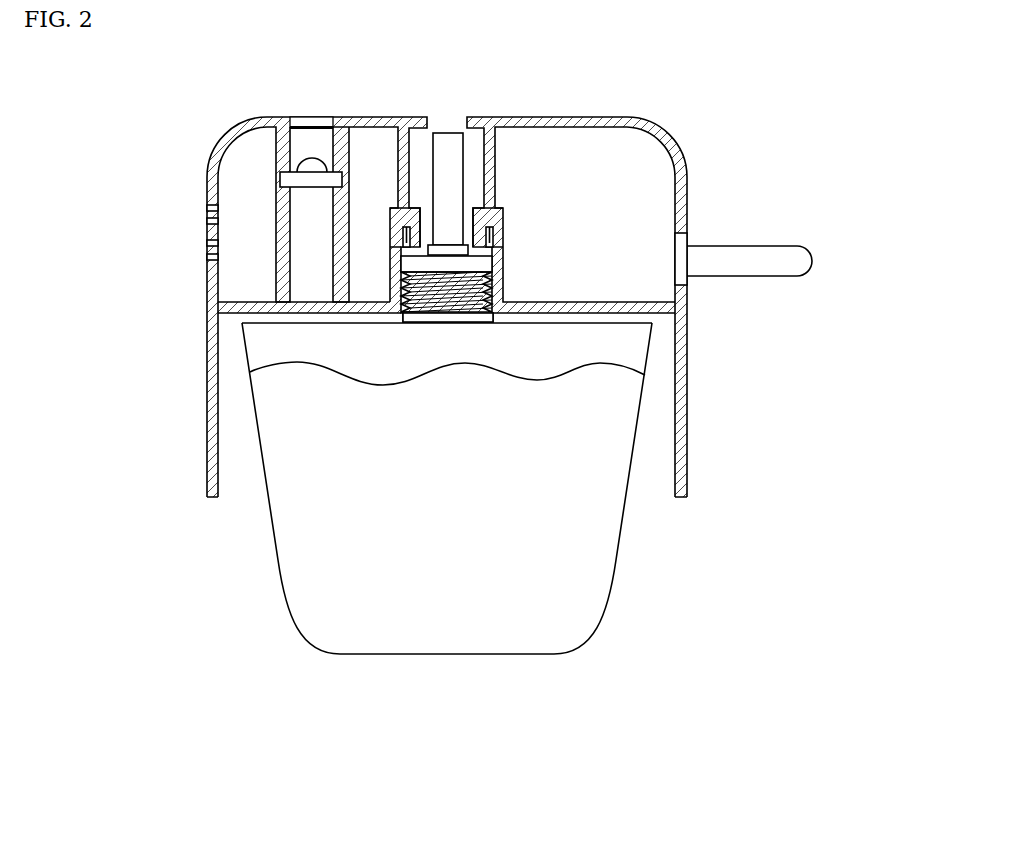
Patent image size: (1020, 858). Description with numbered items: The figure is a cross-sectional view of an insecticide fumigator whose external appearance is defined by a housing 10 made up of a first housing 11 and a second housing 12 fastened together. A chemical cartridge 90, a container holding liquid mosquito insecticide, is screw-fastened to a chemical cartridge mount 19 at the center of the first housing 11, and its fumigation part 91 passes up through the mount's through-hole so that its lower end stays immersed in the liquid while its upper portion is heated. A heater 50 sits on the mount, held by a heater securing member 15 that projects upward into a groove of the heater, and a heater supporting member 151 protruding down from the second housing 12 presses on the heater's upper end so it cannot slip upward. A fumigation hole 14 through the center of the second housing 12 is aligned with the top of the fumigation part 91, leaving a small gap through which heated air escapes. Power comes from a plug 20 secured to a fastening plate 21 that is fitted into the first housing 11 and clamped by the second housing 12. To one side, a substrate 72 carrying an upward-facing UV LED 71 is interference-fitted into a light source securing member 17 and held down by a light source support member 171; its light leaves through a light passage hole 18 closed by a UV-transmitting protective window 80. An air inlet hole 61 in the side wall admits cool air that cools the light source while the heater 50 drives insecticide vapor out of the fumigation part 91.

The housing 10 is at (858, 195).
The first housing 11 is at (688, 392).
The second housing 12 is at (688, 193).
The fumigation hole 14 is at (453, 120).
The heater securing member 15 is at (507, 230).
The heater supporting member 151 is at (495, 172).
The light source securing member 17 is at (318, 263).
The light source support member 171 is at (341, 160).
The light passage hole 18 is at (300, 117).
The chemical cartridge mount 19 is at (500, 262).
The plug 20 is at (750, 268).
The fastening plate 21 is at (688, 243).
The heater 50 is at (488, 235).
The air inlet hole 61 is at (208, 219).
The UV LED 71 is at (300, 165).
The substrate 72 is at (280, 174).
The protective window 80 is at (312, 122).
The chemical cartridge 90 is at (433, 640).
The fumigation part 91 is at (445, 140).